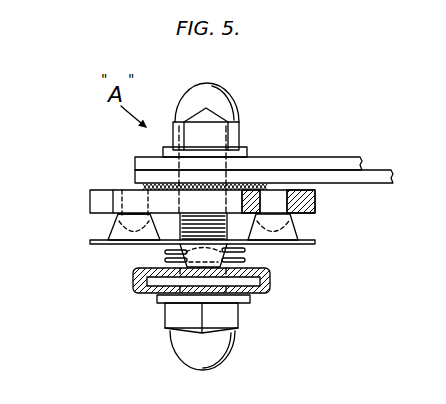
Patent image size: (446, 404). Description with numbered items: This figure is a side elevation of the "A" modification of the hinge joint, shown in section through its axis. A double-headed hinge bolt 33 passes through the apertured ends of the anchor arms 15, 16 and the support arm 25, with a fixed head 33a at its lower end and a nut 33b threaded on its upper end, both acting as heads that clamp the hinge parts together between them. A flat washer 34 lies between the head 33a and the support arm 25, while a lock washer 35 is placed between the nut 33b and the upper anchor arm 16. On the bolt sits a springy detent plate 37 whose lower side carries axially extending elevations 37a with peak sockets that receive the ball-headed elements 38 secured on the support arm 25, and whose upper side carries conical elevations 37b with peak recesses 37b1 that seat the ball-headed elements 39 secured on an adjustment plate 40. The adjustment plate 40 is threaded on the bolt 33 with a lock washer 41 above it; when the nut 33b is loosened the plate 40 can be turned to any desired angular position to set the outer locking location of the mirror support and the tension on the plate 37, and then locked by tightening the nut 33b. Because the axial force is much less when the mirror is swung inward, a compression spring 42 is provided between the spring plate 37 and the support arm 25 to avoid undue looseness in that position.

The anchor arm 15 is at (378, 171).
The upper anchor arm 16 is at (322, 157).
The support arm 25 is at (219, 297).
The hinge bolt 33 is at (225, 253).
The head 33a is at (242, 340).
The nut 33b is at (214, 88).
The flat washer 34 is at (252, 300).
The lock washer 35 is at (248, 157).
The springy detent plate 37 is at (316, 242).
The projection-receiving elevations 37a is at (179, 247).
The conical elevations 37b is at (113, 232).
The peak recesses 37b1 is at (118, 220).
The ball-headed elements 38 is at (210, 263).
The ball-headed elements 39 is at (122, 191).
The adjustment plate 40 is at (130, 218).
The lock washer 41 is at (150, 184).
The compression spring 42 is at (245, 260).